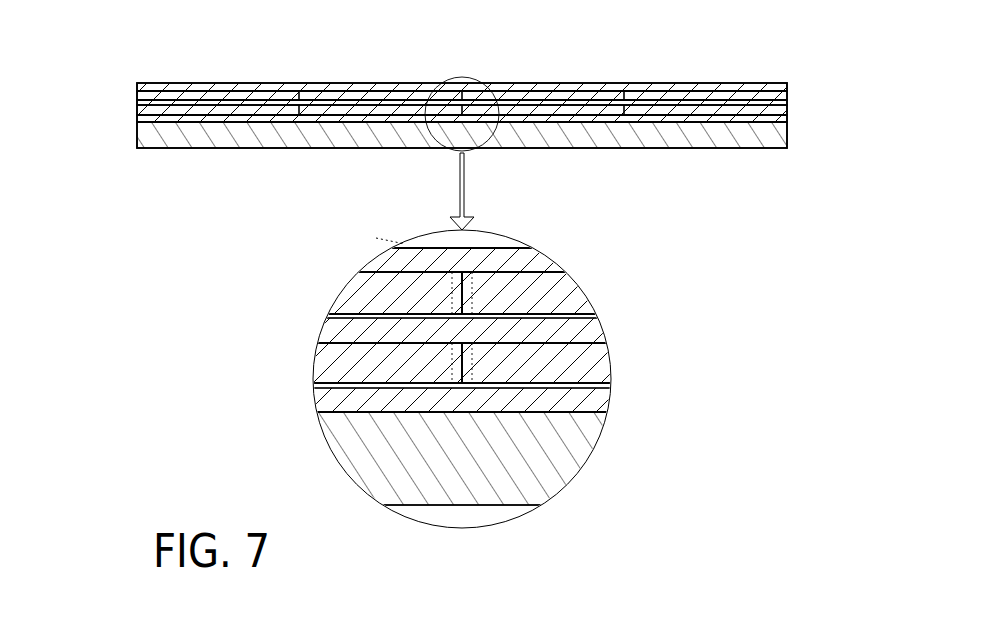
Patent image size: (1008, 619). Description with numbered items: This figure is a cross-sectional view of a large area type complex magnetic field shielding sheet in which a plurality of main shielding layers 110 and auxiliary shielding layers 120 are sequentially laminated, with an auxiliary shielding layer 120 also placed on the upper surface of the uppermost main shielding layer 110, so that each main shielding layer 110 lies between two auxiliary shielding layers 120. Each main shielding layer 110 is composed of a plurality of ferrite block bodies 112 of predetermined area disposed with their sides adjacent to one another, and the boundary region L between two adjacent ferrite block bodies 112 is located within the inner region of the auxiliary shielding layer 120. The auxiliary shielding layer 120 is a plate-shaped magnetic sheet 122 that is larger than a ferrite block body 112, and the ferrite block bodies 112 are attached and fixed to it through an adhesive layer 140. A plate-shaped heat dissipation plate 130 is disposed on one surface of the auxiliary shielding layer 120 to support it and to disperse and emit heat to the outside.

The main shielding layer 110 is at (790, 109).
The ferrite block body 112 is at (648, 111).
The auxiliary shielding layer 120 is at (134, 118).
The plate-shaped magnetic sheet 122 is at (273, 120).
The heat dissipation plate 130 is at (792, 140).
The adhesive layer 140 is at (593, 315).
The boundary region L is at (381, 237).